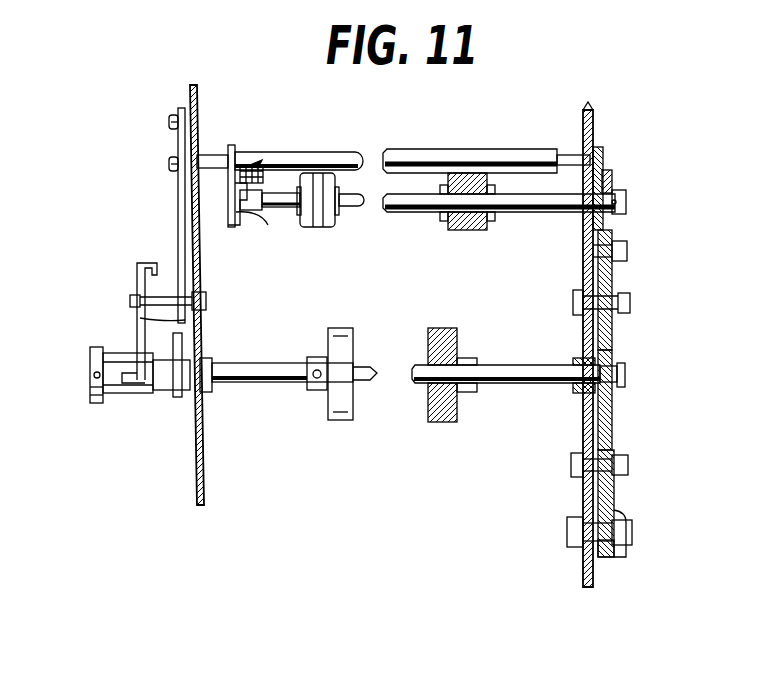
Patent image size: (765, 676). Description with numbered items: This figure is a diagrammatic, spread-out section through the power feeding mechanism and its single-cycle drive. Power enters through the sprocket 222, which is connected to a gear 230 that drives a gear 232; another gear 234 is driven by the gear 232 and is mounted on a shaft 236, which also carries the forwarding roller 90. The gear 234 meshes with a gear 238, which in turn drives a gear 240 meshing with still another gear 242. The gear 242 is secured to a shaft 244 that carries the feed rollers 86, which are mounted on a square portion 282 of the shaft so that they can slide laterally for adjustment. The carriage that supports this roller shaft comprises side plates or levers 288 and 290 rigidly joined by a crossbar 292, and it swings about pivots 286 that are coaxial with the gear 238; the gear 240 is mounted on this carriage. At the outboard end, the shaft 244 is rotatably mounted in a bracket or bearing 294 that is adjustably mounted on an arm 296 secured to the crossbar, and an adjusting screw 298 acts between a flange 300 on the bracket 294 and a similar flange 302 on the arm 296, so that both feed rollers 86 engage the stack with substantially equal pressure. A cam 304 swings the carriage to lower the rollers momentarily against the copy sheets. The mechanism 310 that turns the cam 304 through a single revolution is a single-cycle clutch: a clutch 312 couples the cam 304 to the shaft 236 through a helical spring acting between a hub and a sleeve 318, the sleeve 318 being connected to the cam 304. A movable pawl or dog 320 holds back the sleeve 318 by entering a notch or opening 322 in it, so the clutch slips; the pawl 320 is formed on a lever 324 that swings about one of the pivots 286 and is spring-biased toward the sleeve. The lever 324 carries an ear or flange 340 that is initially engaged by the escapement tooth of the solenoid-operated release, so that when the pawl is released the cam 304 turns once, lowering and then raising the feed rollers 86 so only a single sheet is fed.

The feed rollers 86 is at (470, 230).
The forwarding roller 90 is at (352, 418).
The sprocket 222 is at (624, 557).
The gear 230 is at (612, 560).
The gear 232 is at (612, 446).
The gear 234 is at (612, 347).
The shaft 236 is at (265, 383).
The gear 238 is at (612, 280).
The gear 240 is at (612, 240).
The gear 242 is at (608, 175).
The shaft 244 is at (618, 201).
The square portion of shaft 282 is at (396, 212).
The pivots 286 is at (130, 300).
The side plate or lever 288 is at (178, 224).
The side plate or lever 290 is at (583, 233).
The crossbar 292 is at (480, 118).
The bracket or bearing 294 is at (244, 214).
The arm 296 is at (230, 180).
The adjusting screw 298 is at (260, 166).
The flange 300 is at (268, 208).
The flange 302 is at (263, 162).
The cam 304 is at (176, 400).
The single cycle clutch mechanism 310 is at (128, 440).
The clutch 312 is at (100, 350).
The sleeve 318 is at (108, 400).
The pawl or dog 320 is at (125, 395).
The notch or opening 322 is at (130, 360).
The lever 324 is at (150, 320).
The ear or flange 340 is at (142, 262).